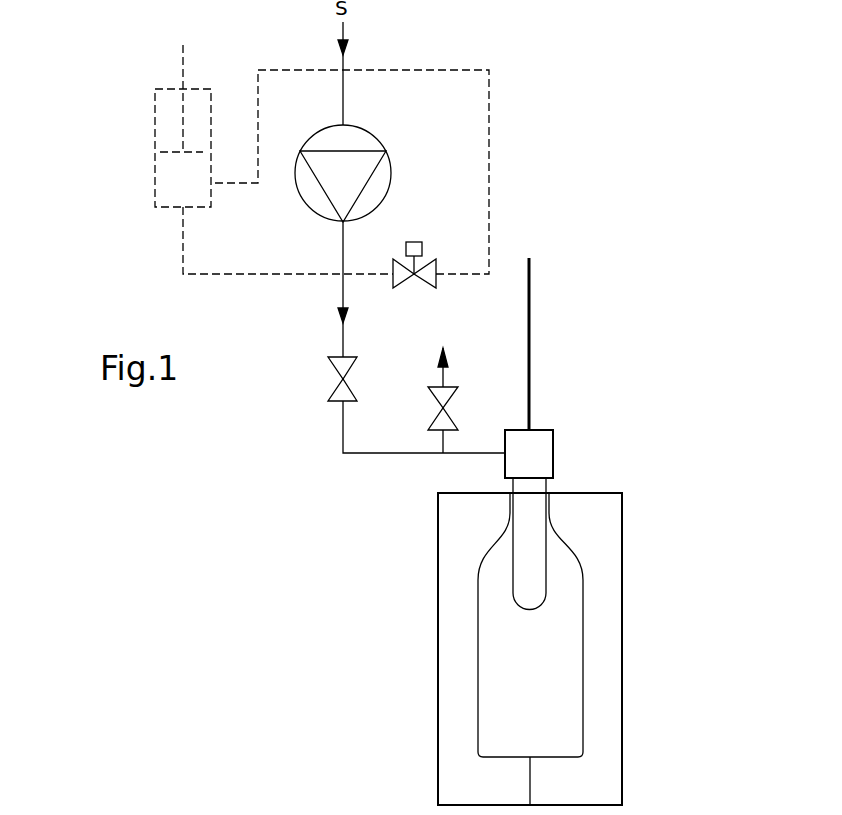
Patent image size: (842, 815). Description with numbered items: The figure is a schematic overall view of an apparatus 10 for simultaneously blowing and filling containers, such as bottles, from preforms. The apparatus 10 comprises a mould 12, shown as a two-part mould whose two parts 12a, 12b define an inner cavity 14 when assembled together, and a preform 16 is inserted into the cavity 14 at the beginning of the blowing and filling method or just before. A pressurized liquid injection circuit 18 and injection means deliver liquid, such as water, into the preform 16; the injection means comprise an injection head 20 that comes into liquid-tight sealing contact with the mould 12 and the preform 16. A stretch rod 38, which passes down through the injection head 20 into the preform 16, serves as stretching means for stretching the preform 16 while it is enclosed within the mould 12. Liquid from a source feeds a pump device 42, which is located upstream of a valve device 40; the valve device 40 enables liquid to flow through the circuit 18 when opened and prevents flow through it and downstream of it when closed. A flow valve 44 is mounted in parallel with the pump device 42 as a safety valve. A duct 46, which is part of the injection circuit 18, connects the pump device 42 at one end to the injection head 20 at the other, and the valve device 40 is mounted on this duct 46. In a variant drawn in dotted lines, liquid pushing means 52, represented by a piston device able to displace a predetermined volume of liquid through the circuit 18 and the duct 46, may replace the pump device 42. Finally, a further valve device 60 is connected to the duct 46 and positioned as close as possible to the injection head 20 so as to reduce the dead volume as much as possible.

The apparatus 10 is at (585, 147).
The mould 12 is at (657, 780).
The first mould part 12a is at (452, 723).
The second mould part 12b is at (605, 718).
The inner cavity 14 is at (495, 668).
The preform 16 is at (533, 592).
The pressurized liquid injection circuit 18 is at (363, 472).
The injection head 20 is at (553, 453).
The stretch rod 38 is at (558, 322).
The valve device 40 is at (337, 383).
The pump device 42 is at (410, 147).
The flow valve 44 is at (435, 248).
The duct 46 is at (341, 331).
The liquid pushing means 52 is at (122, 146).
The valve device 60 is at (470, 403).